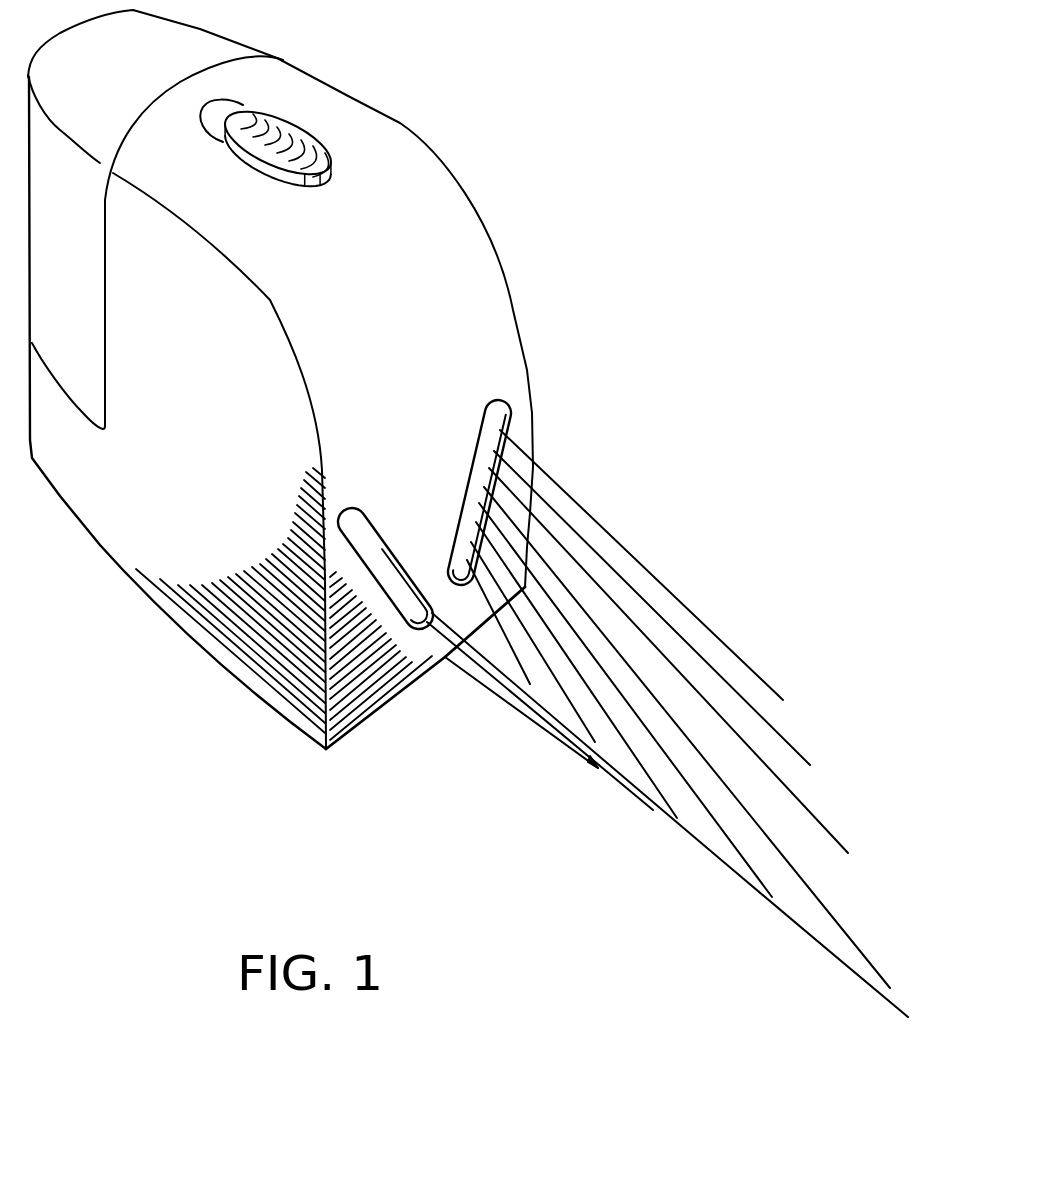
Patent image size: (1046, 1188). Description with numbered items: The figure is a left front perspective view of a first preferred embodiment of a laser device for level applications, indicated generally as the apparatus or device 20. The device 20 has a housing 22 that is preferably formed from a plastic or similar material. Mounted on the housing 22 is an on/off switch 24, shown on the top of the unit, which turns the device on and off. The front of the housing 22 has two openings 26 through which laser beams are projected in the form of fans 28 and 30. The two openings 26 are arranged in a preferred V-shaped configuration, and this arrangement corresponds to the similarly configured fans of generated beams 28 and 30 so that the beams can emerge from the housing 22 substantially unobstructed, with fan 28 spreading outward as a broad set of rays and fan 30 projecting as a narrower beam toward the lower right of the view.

The apparatus or device 20 is at (610, 183).
The housing 22 is at (433, 307).
The on/off switch 24 is at (291, 152).
The openings 26 is at (350, 507).
The fan 28 is at (700, 621).
The fan 30 is at (547, 727).